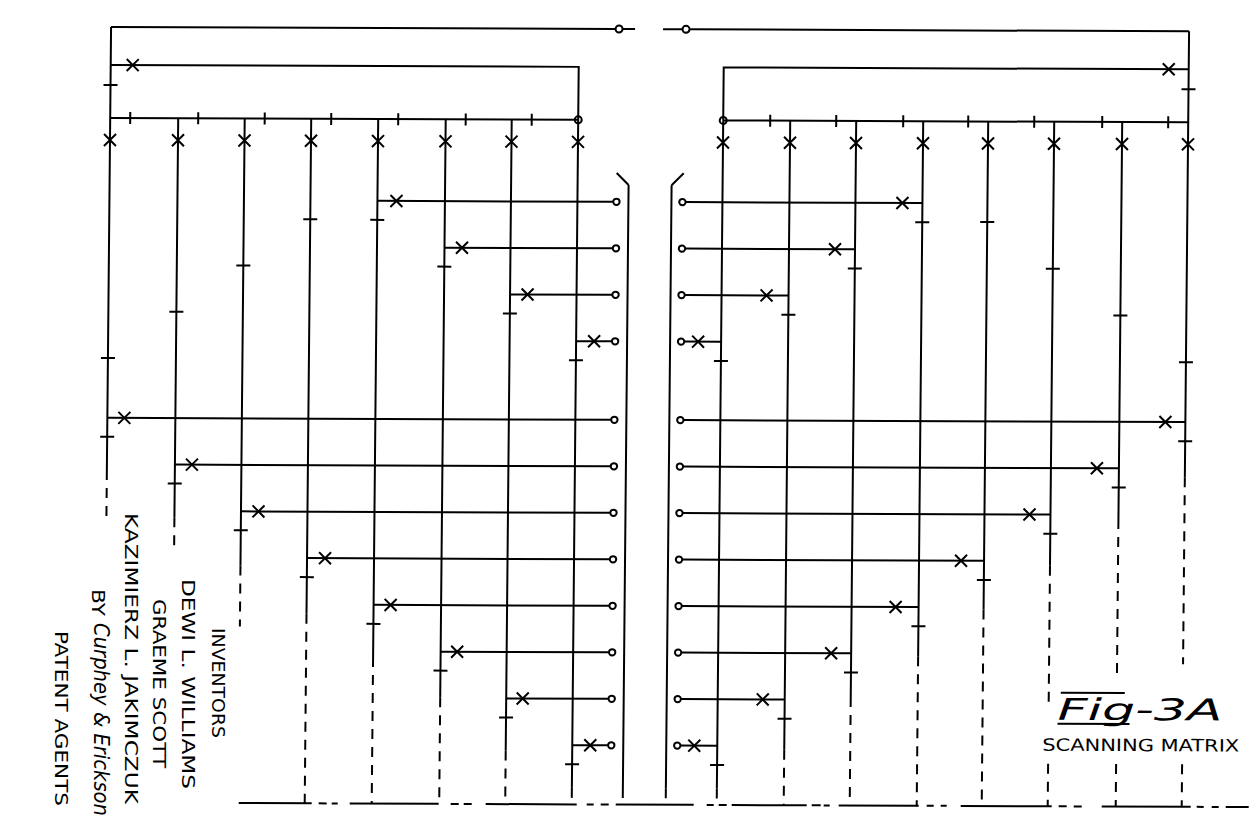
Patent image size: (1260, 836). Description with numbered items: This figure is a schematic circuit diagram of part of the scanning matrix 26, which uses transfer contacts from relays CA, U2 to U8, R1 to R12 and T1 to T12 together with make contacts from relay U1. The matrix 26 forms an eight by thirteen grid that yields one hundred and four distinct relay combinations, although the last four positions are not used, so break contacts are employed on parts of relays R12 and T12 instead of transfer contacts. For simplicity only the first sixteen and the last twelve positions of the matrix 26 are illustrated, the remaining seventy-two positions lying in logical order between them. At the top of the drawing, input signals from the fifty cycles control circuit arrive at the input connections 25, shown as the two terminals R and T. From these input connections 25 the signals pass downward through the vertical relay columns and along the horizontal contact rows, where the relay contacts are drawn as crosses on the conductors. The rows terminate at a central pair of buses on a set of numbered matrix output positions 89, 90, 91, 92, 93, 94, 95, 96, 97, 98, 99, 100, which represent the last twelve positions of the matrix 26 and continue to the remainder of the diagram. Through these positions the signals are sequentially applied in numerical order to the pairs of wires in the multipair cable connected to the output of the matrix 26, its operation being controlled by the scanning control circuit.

The input connections 25 is at (652, 22).
The scanning matrix 26 is at (650, 429).
The matrix output lead 89 is at (641, 750).
The matrix output lead 90 is at (643, 703).
The matrix output lead 91 is at (643, 656).
The matrix output lead 92 is at (644, 610).
The matrix output lead 93 is at (643, 564).
The matrix output lead 94 is at (648, 517).
The matrix output lead 95 is at (649, 470).
The matrix output lead 96 is at (649, 424).
The matrix output lead 97 is at (647, 346).
The matrix output lead 98 is at (646, 299).
The matrix output lead 99 is at (647, 252).
The matrix output lead 100 is at (648, 206).